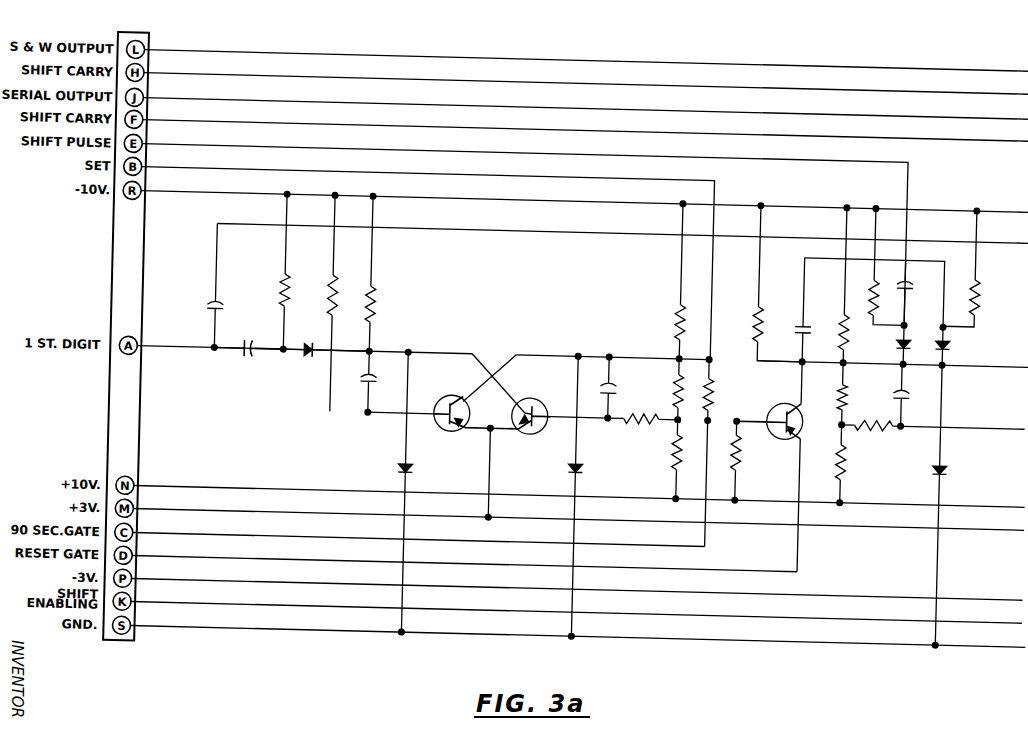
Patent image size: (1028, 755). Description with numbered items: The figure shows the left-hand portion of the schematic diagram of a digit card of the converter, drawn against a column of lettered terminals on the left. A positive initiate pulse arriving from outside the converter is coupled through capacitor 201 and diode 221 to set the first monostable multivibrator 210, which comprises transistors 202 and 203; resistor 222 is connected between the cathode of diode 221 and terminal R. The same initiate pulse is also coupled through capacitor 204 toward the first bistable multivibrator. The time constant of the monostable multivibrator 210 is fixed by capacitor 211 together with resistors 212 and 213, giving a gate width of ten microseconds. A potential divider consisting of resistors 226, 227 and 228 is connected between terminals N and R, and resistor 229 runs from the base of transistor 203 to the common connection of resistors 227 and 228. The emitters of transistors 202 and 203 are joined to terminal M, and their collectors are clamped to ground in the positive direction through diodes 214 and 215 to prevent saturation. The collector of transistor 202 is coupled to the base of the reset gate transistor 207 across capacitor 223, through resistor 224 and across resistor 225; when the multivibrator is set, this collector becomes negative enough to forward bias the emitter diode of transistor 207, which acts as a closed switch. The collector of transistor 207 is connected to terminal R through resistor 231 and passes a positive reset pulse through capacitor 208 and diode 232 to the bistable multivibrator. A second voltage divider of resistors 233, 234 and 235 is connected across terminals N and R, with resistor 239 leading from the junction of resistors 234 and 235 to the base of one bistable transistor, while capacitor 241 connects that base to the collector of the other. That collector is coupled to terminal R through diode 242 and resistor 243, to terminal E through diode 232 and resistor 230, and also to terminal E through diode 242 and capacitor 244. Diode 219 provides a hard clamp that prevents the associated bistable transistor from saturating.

The capacitor 201 is at (254, 353).
The transistor 202 is at (447, 422).
The transistor 203 is at (549, 420).
The capacitor 204 is at (222, 299).
The reset gate transistor 207 is at (792, 424).
The capacitor 208 is at (830, 306).
The first monostable multivibrator 210 is at (516, 334).
The capacitor 211 is at (380, 376).
The resistor 212 is at (346, 285).
The resistor 213 is at (384, 290).
The diode 214 is at (435, 462).
The diode 215 is at (590, 458).
The diode 219 is at (946, 449).
The diode 221 is at (314, 353).
The resistor 222 is at (299, 285).
The capacitor 223 is at (623, 378).
The resistor 224 is at (722, 382).
The resistor 225 is at (751, 444).
The resistor 226 is at (683, 310).
The resistor 227 is at (684, 380).
The resistor 228 is at (683, 450).
The resistor 229 is at (638, 410).
The resistor 230 is at (986, 296).
The resistor 231 is at (770, 302).
The diode 232 is at (956, 326).
The resistor 233 is at (855, 318).
The resistor 234 is at (855, 378).
The resistor 235 is at (855, 441).
The resistor 239 is at (880, 410).
The capacitor 241 is at (913, 379).
The diode 242 is at (905, 329).
The resistor 243 is at (885, 282).
The capacitor 244 is at (924, 270).